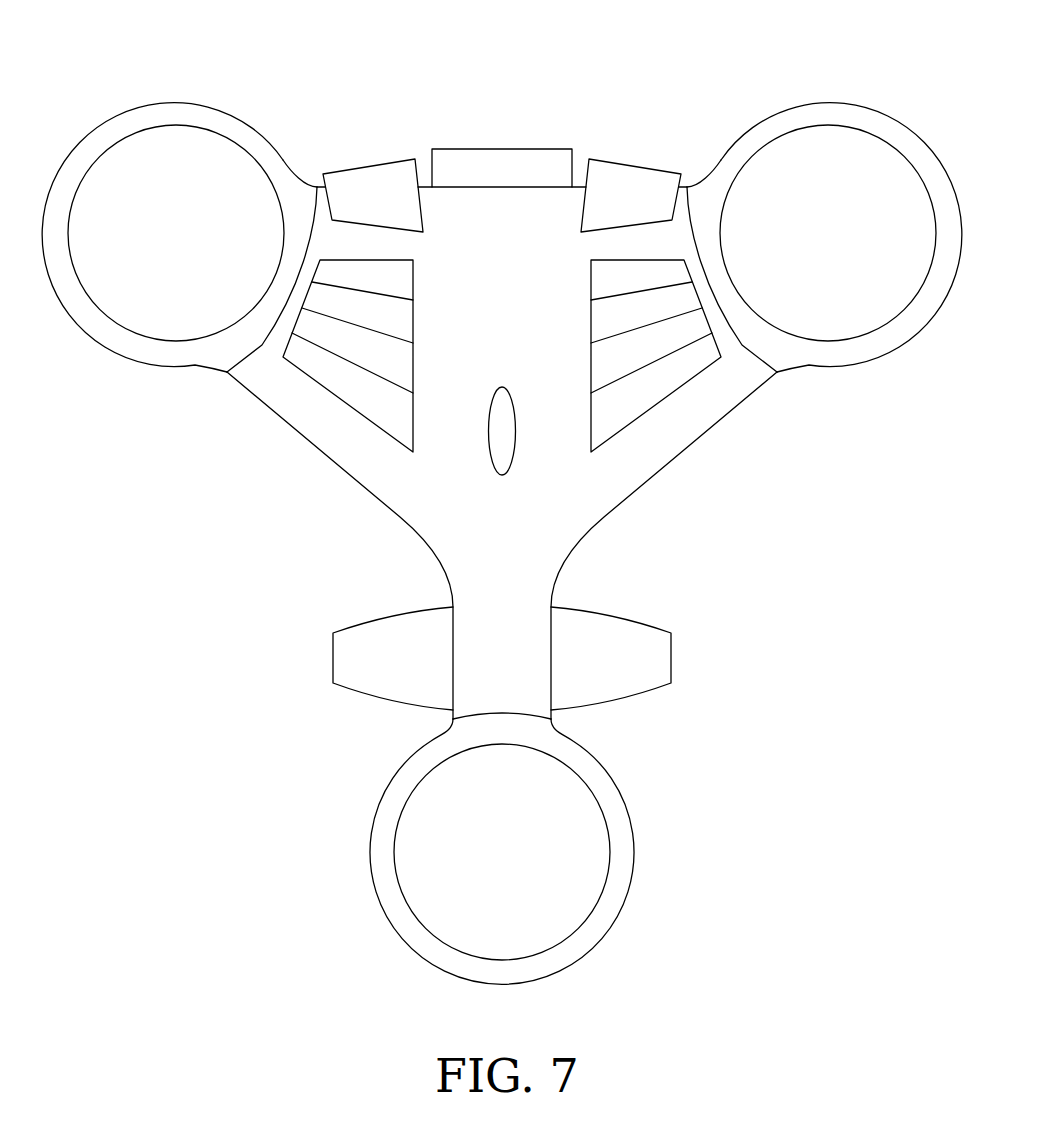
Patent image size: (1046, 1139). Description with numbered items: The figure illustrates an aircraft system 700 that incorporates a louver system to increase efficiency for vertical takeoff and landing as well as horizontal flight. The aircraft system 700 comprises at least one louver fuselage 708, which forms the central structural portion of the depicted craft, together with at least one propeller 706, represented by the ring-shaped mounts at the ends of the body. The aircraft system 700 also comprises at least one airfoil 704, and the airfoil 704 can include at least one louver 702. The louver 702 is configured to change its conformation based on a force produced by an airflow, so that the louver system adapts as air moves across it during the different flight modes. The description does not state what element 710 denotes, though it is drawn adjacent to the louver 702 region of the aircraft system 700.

The aircraft system 700 is at (362, 50).
The louver 702 is at (643, 277).
The airfoil 704 is at (352, 382).
The propeller 706 is at (838, 308).
The louver fuselage 708 is at (597, 497).
The rib 710 is at (675, 348).